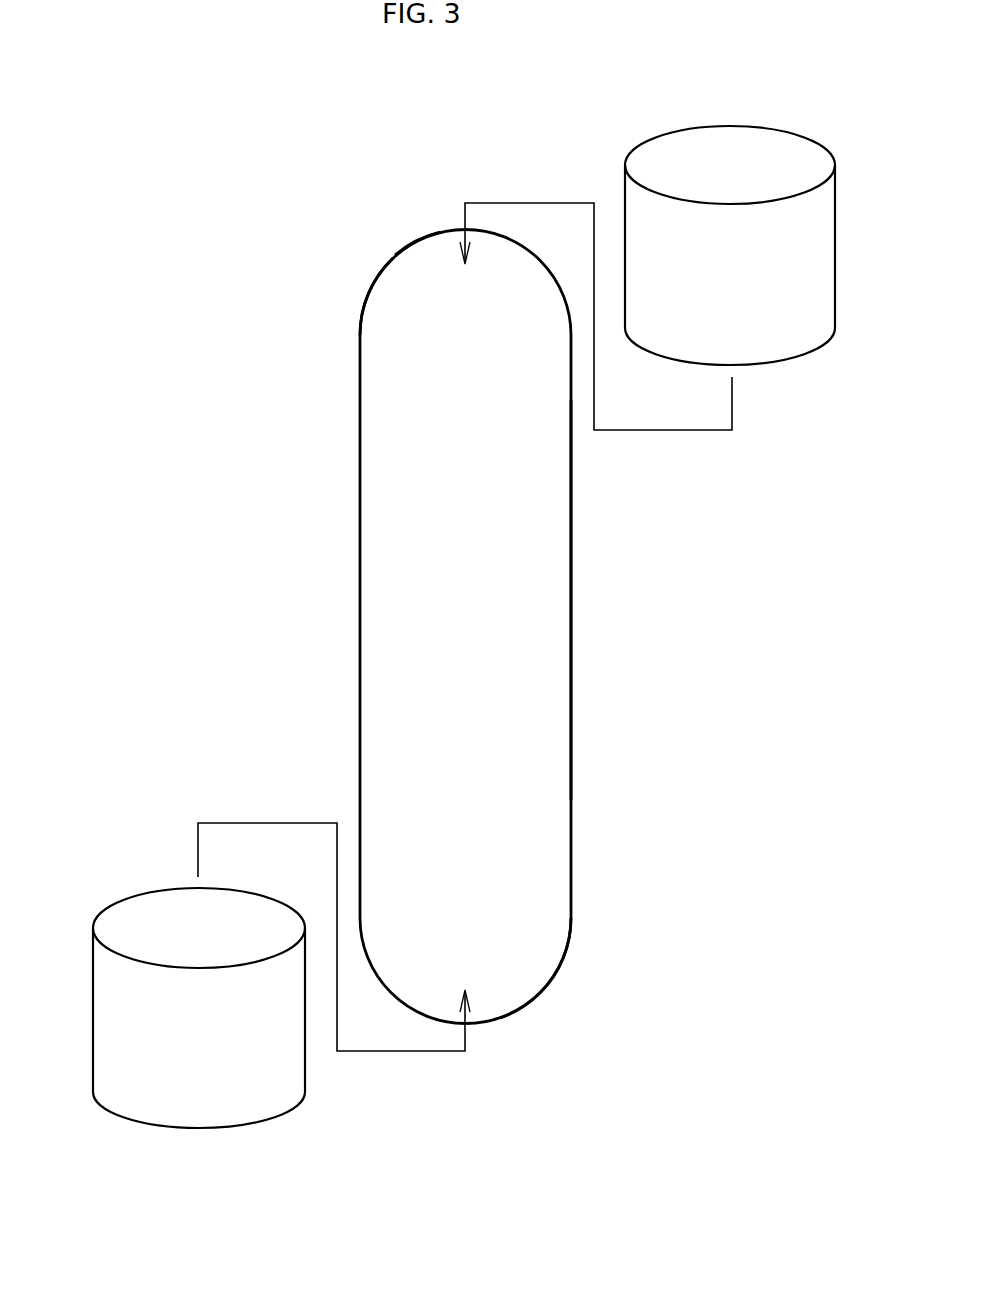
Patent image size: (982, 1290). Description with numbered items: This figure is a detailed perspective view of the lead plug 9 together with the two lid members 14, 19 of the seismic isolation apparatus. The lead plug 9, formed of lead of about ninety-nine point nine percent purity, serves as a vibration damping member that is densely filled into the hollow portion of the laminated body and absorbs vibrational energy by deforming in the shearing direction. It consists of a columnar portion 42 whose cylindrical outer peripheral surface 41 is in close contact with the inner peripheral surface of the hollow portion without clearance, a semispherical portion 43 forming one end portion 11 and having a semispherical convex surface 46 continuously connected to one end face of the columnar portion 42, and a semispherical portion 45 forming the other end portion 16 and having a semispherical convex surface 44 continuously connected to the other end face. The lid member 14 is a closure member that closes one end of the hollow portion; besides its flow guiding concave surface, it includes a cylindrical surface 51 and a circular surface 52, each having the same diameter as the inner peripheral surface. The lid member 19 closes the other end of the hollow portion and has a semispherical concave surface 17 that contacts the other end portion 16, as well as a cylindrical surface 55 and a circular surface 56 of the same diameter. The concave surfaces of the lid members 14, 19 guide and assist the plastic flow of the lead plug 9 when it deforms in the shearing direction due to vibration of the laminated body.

The lead plug 9 is at (342, 635).
The one end portion 11 is at (412, 275).
The lid member 14 is at (718, 240).
The other end portion 16 is at (533, 988).
The semispherical concave surface 17 is at (147, 920).
The lid member 19 is at (170, 1010).
The cylindrical outer peripheral surface 41 is at (556, 667).
The columnar portion 42 is at (527, 575).
The semispherical portion 43 is at (400, 290).
The semispherical convex surface 44 is at (548, 952).
The semispherical portion 45 is at (492, 990).
The semispherical convex surface 46 is at (437, 255).
The cylindrical surface 51 is at (792, 340).
The circular surface 52 is at (731, 138).
The cylindrical surface 55 is at (117, 1050).
The circular surface 56 is at (255, 1118).